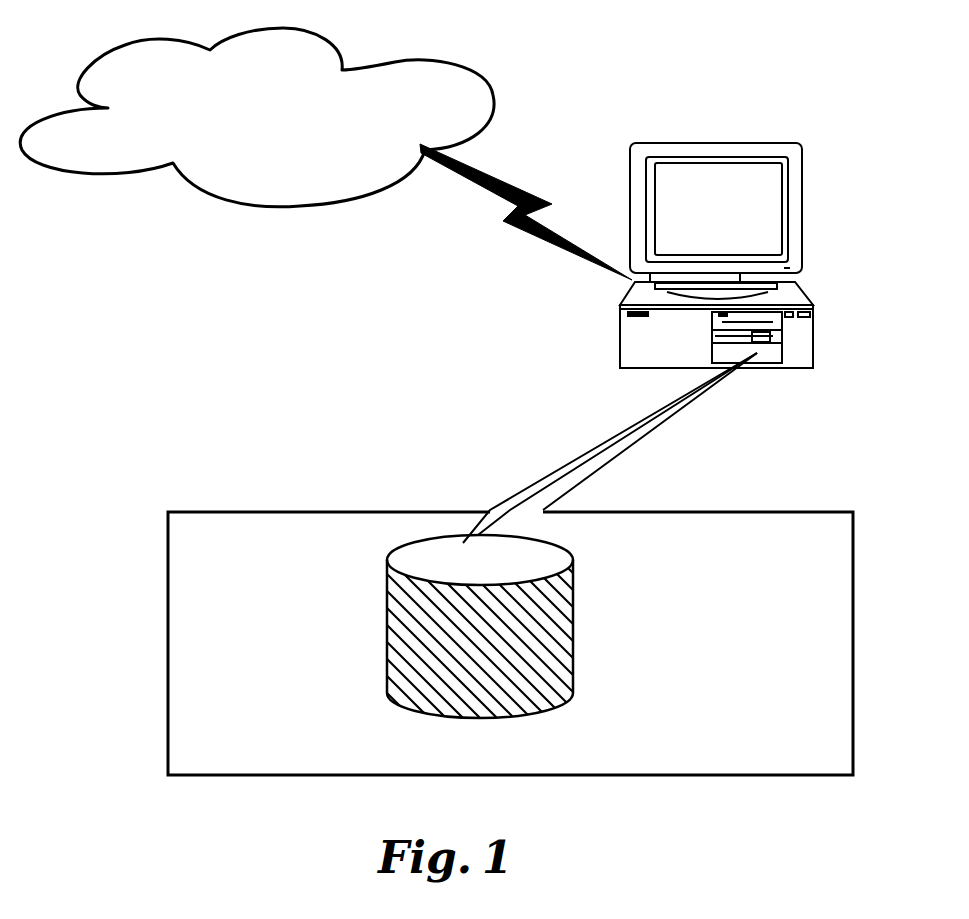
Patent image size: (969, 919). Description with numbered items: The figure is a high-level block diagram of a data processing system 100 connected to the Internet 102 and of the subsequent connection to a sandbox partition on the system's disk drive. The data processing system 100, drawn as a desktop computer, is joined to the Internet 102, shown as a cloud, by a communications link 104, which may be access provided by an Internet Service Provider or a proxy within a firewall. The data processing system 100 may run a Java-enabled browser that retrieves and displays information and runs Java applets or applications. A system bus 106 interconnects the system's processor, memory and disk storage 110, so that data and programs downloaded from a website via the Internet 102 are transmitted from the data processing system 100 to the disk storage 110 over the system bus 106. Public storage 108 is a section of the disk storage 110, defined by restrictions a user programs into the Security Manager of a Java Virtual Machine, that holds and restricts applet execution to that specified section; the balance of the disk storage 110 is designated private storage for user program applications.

The data processing system 100 is at (770, 370).
The Internet 102 is at (447, 63).
The communications link 104 is at (535, 194).
The system bus 106 is at (598, 448).
The public storage 108 is at (426, 553).
The disk storage 110 is at (396, 649).